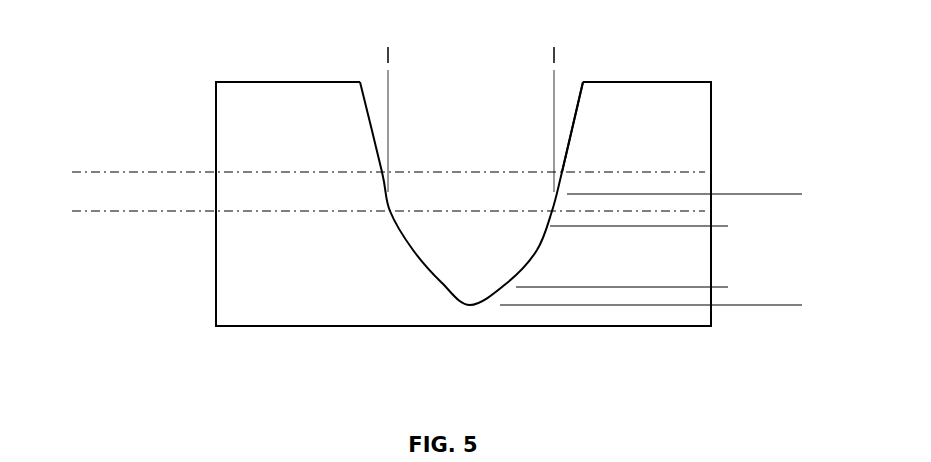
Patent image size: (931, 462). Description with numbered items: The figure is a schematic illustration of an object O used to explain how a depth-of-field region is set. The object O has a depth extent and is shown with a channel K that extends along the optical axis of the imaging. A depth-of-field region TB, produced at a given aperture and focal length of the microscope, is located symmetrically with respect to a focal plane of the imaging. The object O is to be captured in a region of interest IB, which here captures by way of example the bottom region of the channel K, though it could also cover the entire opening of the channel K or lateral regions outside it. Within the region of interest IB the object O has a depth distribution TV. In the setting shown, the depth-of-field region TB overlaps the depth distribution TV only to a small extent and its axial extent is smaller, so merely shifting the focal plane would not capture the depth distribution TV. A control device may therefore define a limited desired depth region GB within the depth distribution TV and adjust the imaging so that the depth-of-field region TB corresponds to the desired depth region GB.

The object O is at (463, 326).
The depth-of-field region TB is at (77, 122).
The region of interest IB is at (388, 54).
The channel K is at (575, 86).
The desired depth region GB is at (740, 227).
The depth distribution TV is at (793, 195).